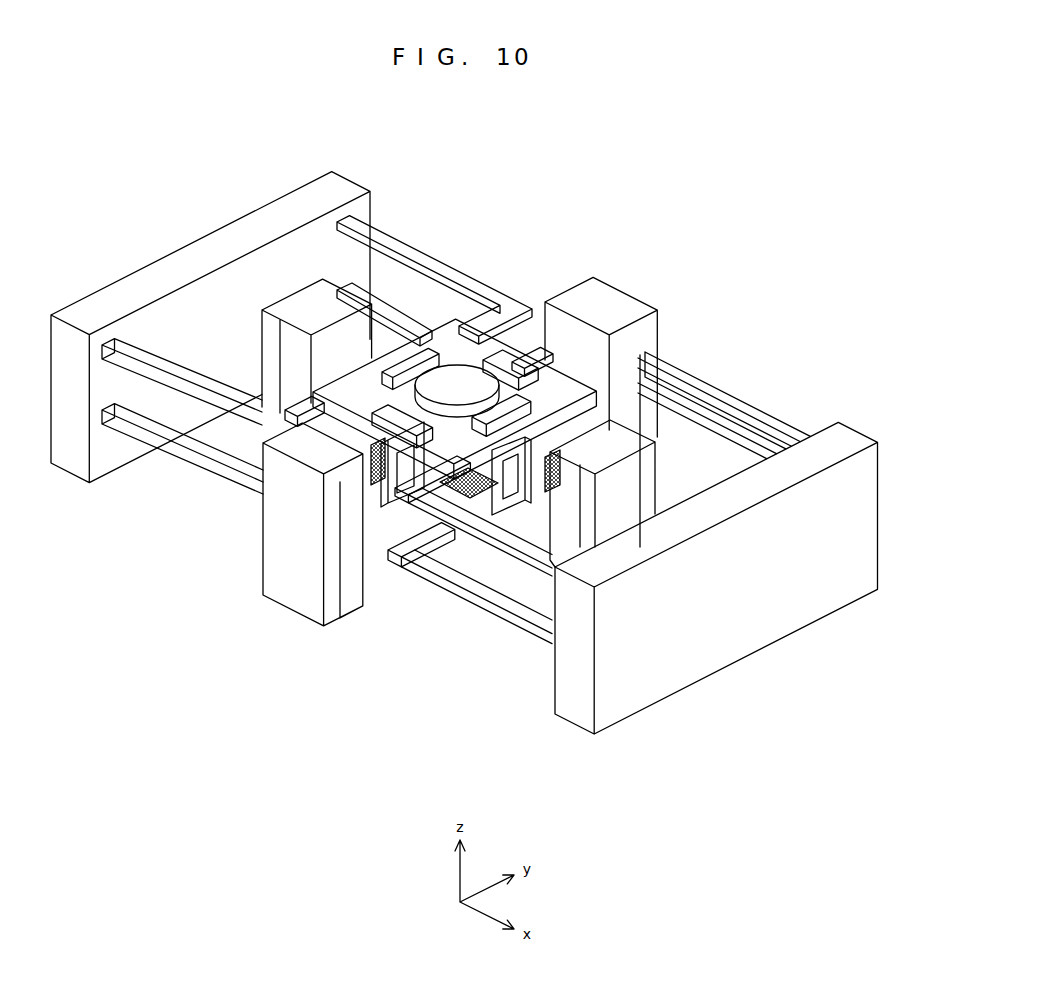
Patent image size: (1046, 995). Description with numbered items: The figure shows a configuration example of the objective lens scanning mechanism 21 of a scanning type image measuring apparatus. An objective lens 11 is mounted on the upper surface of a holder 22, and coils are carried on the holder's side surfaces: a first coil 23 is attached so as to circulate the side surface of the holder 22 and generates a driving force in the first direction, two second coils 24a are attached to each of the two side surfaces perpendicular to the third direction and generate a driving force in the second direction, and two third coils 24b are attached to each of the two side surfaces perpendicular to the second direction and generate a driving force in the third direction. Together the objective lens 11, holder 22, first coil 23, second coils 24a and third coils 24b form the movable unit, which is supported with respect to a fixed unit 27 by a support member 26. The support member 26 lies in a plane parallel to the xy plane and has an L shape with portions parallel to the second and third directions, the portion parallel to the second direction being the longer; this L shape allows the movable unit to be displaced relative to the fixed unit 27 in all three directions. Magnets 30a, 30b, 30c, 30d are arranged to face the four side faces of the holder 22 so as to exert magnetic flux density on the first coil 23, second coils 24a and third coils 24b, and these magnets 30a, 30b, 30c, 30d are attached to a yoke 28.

The objective lens 11 is at (458, 380).
The objective lens scanning mechanism 21 is at (655, 160).
The holder 22 is at (565, 390).
The first coil 23 is at (475, 510).
The second coils 24a is at (397, 478).
The third coils 24b is at (505, 520).
The support member 26 is at (383, 240).
The fixed unit 27 is at (210, 245).
The yoke 28 is at (498, 434).
The magnet 30a is at (352, 505).
The magnet 30b is at (607, 440).
The magnet 30c is at (567, 300).
The magnet 30d is at (335, 306).